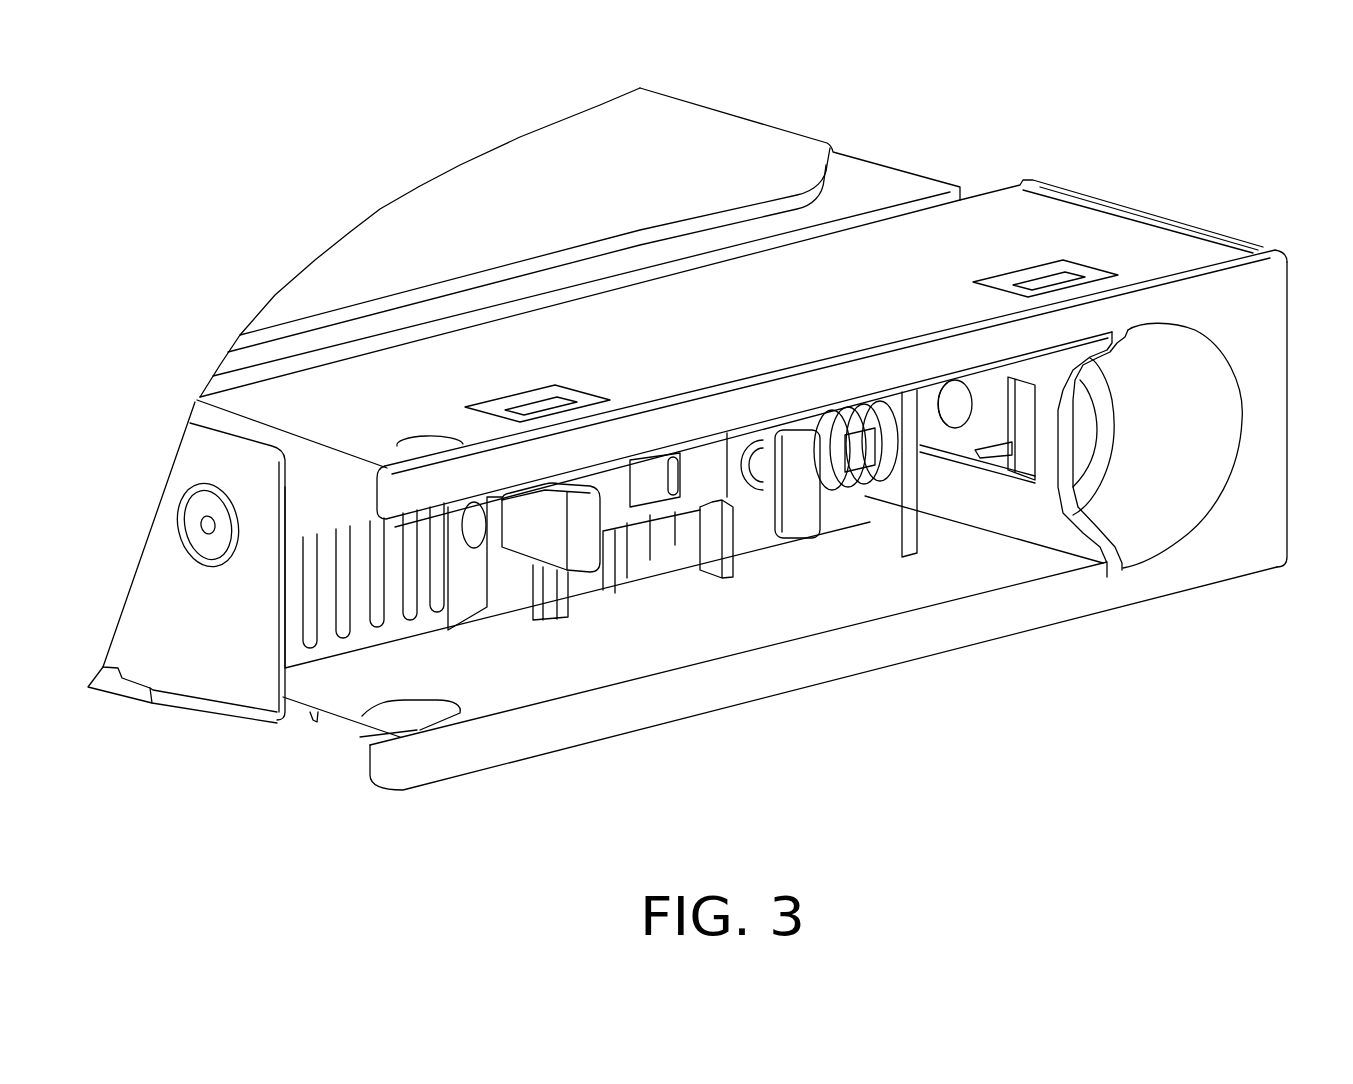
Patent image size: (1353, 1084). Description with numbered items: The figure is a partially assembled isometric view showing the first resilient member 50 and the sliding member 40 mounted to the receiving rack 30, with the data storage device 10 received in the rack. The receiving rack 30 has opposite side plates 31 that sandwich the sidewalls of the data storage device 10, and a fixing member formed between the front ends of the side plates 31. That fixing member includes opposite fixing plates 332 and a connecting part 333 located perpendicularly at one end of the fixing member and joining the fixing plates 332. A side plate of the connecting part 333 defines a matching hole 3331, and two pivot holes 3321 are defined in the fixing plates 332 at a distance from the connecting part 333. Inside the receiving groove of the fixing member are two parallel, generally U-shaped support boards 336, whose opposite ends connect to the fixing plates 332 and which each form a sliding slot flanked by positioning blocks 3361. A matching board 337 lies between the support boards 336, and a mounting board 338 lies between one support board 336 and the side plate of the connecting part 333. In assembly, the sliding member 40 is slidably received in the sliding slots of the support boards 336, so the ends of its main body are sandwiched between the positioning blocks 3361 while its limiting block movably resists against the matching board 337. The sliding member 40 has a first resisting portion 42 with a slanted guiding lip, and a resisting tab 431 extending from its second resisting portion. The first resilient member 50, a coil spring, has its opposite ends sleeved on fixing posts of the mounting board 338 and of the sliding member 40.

The data storage device 10 is at (708, 150).
The receiving rack 30 is at (689, 484).
The side plate 31 is at (178, 585).
The fixing plate 332 is at (983, 233).
The pivot hole 3321 is at (388, 715).
The connecting part 333 is at (1230, 535).
The matching hole 3331 is at (1010, 443).
The support board 336 is at (517, 605).
The positioning block 3361 is at (735, 558).
The matching board 337 is at (625, 578).
The mounting board 338 is at (887, 503).
The sliding member 40 is at (652, 512).
The first resisting portion 42 is at (583, 548).
The resisting tab 431 is at (795, 522).
The first resilient member 50 is at (852, 483).